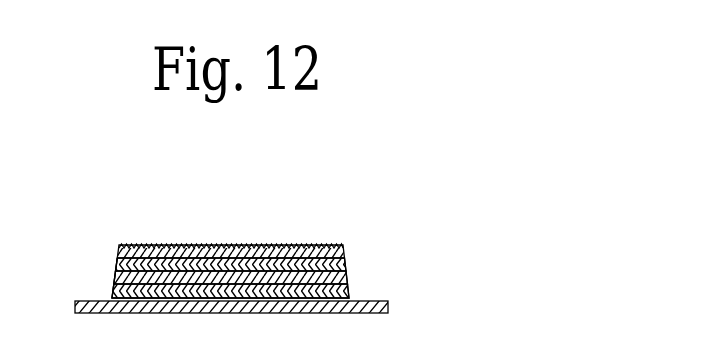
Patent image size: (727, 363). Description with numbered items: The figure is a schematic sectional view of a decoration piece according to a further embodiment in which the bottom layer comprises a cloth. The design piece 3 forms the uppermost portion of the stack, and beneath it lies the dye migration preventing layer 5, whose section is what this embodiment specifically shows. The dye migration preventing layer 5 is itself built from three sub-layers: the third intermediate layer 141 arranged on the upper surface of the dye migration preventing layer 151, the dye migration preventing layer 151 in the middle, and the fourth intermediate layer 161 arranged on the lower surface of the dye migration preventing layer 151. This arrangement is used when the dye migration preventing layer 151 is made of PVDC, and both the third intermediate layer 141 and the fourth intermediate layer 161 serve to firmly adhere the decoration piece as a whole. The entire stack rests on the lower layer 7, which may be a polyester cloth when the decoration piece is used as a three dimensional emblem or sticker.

The design piece 3 is at (265, 245).
The dye migration preventing layer 5 is at (106, 260).
The lower layer 7 is at (373, 308).
The third intermediate layer 141 is at (346, 262).
The dye migration preventing layer 151 is at (348, 277).
The fourth intermediate layer 161 is at (348, 292).